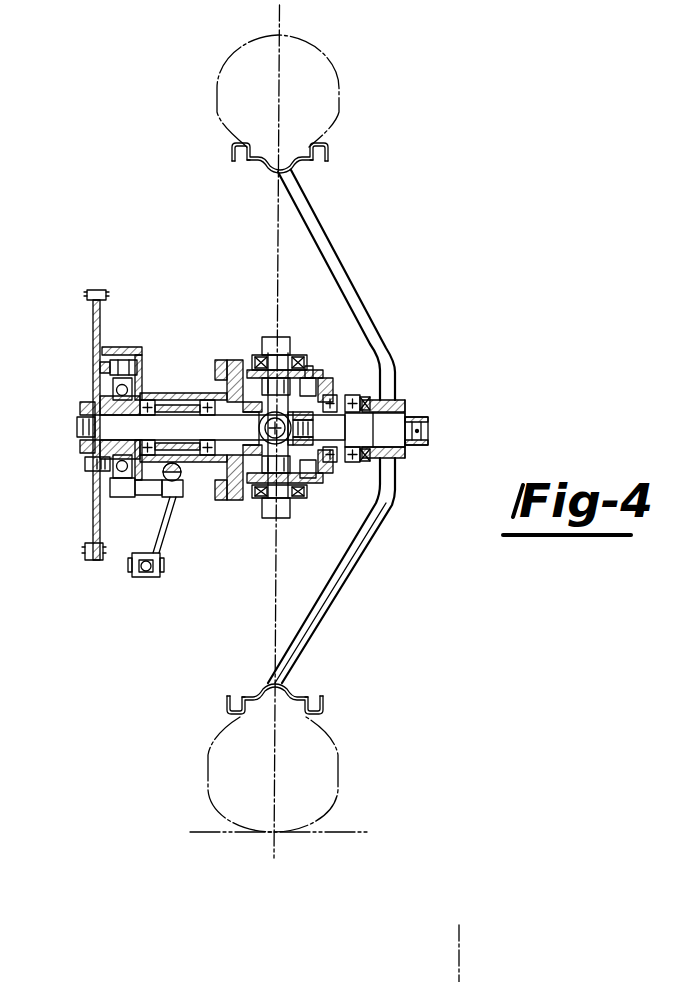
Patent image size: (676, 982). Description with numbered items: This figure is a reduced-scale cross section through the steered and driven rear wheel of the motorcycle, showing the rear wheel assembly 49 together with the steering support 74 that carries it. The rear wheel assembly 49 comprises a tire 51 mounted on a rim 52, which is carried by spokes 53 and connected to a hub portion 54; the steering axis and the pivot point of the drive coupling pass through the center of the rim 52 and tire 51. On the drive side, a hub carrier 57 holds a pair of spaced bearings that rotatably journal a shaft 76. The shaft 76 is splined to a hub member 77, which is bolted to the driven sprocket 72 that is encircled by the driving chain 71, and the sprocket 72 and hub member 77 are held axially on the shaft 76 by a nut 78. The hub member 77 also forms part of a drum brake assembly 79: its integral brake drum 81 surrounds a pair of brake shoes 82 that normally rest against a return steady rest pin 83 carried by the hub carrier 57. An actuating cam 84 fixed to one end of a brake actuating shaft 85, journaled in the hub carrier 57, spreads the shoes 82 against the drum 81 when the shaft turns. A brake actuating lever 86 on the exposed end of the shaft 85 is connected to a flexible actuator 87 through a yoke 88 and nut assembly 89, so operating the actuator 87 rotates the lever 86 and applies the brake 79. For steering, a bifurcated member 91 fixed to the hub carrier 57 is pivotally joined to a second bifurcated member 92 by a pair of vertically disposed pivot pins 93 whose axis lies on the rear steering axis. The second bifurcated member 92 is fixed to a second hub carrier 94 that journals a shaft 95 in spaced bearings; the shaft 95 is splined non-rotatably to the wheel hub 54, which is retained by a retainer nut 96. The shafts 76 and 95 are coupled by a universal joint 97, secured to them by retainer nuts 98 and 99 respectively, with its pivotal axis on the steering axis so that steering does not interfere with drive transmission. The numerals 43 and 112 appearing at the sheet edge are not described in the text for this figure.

The rear wheel assembly 49 is at (361, 290).
The tire 51 is at (346, 92).
The rim 52 is at (329, 154).
The spokes 53 is at (320, 220).
The hub portion 54 is at (398, 403).
The hub carrier 57 is at (184, 464).
The driving chain 71 is at (107, 293).
The driven sprocket 72 is at (93, 325).
The steering support 74 is at (145, 262).
The shaft 76 is at (175, 423).
The hub member 77 is at (95, 455).
The nut 78 is at (80, 413).
The drum brake assembly 79 is at (66, 513).
The brake drum 81 is at (120, 349).
The brake shoes 82 is at (118, 380).
The return steady rest pin 83 is at (118, 363).
The actuating cam 84 is at (117, 488).
The brake actuating shaft 85 is at (153, 492).
The brake actuating lever 86 is at (170, 540).
The flexible actuator 87 is at (145, 580).
The yoke 88 is at (130, 567).
The nut assembly 89 is at (145, 585).
The bifurcated member 91 is at (228, 502).
The second bifurcated member 92 is at (315, 485).
The pivot pins 93 is at (286, 340).
The second hub carrier 94 is at (358, 470).
The shaft 95 is at (357, 420).
The retainer nut 96 is at (421, 412).
The universal joint 97 is at (262, 373).
The retainer nut 98 is at (250, 388).
The retainer nut 99 is at (320, 385).
The (adjacent figure) element 43 is at (441, 981).
The (adjacent figure) element 112 is at (635, 971).